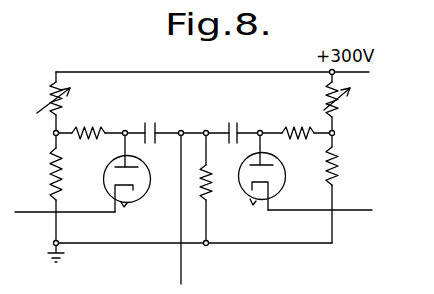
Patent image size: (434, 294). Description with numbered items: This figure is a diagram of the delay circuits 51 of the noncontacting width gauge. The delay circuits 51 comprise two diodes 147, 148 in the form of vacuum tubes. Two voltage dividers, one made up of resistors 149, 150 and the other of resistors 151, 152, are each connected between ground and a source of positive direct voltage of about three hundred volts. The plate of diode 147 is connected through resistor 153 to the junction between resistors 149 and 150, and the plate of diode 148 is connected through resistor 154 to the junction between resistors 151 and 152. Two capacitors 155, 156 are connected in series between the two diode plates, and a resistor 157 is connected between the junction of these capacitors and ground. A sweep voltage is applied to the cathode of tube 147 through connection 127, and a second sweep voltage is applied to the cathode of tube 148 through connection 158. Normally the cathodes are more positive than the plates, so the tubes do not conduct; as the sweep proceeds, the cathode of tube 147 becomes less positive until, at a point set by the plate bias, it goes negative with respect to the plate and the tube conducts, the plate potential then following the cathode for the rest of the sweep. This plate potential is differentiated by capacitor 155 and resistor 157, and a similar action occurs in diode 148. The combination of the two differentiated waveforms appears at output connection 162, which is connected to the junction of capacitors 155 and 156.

The delay circuits 51 is at (315, 259).
The connection 127 is at (65, 205).
The diode 147 is at (127, 177).
The diode 148 is at (260, 179).
The resistor 149 is at (45, 98).
The resistor 150 is at (39, 174).
The resistor 151 is at (351, 101).
The resistor 152 is at (350, 166).
The resistor 153 is at (88, 123).
The resistor 154 is at (298, 122).
The capacitor 155 is at (160, 125).
The capacitor 156 is at (234, 124).
The resistor 157 is at (219, 188).
The connection 158 is at (320, 201).
The output connection 162 is at (185, 257).